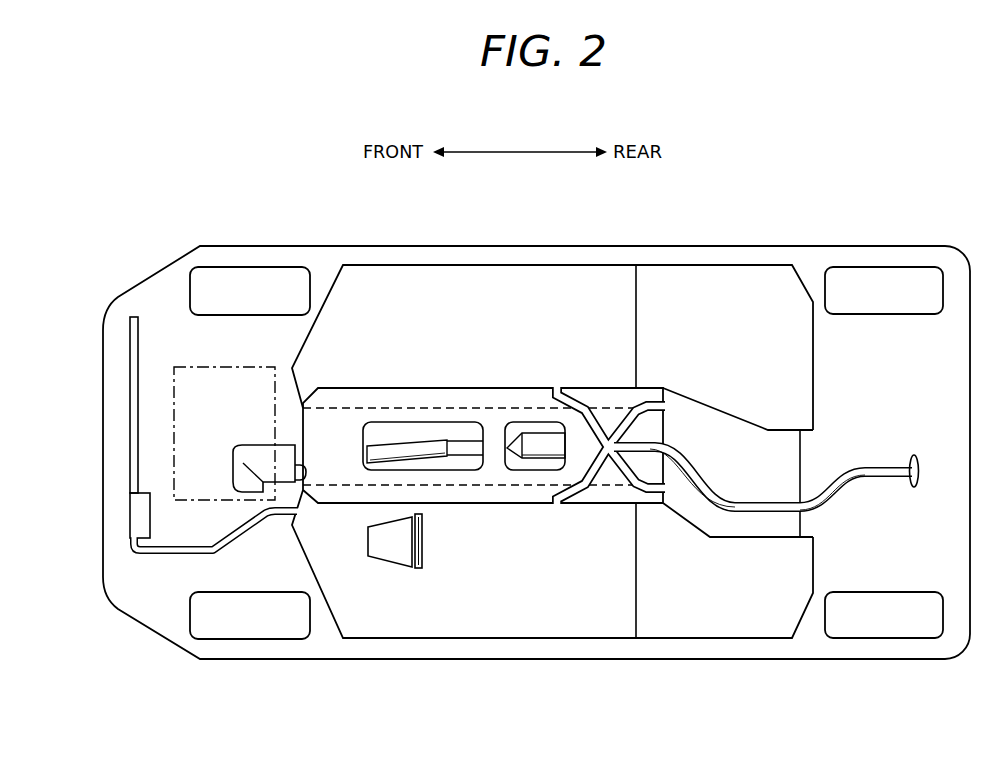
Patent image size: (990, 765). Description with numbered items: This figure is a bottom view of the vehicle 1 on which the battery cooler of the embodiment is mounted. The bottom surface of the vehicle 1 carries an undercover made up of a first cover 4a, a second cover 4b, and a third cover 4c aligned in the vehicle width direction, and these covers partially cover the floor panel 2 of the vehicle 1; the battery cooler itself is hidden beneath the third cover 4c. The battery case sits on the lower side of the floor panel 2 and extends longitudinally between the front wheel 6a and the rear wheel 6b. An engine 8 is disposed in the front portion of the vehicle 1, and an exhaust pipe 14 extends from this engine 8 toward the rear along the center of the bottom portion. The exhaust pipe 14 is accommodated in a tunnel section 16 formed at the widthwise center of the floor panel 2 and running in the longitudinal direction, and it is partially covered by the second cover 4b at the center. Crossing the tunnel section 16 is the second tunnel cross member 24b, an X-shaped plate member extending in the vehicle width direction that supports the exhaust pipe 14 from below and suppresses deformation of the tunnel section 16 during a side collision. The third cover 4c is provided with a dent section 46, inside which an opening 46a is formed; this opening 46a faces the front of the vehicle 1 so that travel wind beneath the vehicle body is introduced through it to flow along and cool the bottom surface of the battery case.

The vehicle 1 is at (775, 163).
The floor panel 2 is at (695, 423).
The first cover 4a is at (457, 297).
The second cover 4b is at (541, 410).
The third cover 4c is at (490, 600).
The front wheel 6a is at (250, 277).
The rear wheel 6b is at (853, 277).
The engine 8 is at (183, 368).
The exhaust pipe 14 is at (887, 463).
The tunnel section 16 is at (385, 415).
The second tunnel cross member 24b is at (570, 398).
The dent section 46 is at (383, 580).
The opening 46a is at (428, 545).